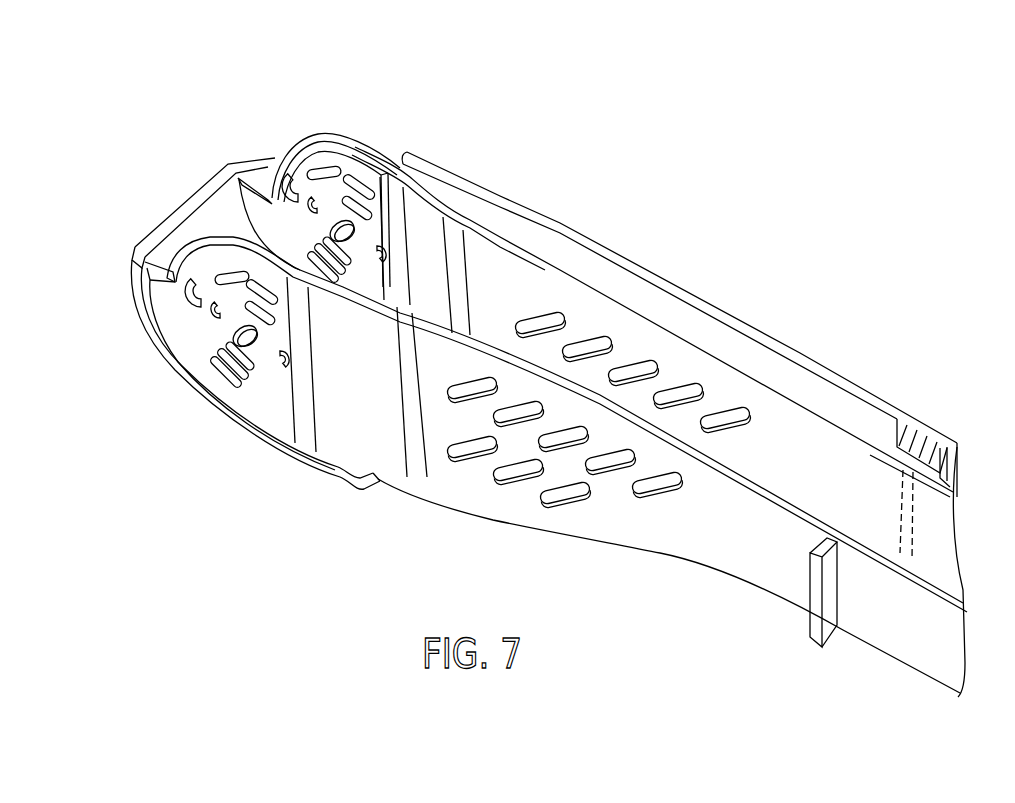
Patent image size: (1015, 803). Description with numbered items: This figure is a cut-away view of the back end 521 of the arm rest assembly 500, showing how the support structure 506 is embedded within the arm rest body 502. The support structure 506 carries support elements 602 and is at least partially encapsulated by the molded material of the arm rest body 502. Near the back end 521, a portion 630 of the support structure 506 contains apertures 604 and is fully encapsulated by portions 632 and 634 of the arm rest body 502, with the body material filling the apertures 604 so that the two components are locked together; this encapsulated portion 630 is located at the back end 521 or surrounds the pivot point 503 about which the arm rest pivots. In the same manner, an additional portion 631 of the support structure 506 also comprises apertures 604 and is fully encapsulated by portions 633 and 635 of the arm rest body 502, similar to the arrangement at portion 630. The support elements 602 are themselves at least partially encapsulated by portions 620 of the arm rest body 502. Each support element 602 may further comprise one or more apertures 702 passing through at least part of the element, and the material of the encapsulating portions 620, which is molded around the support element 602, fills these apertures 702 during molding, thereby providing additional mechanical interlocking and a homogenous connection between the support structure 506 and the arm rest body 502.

The arm rest assembly 500 is at (733, 148).
The arm rest body 502 is at (530, 205).
The pivot point 503 is at (250, 335).
The support structure 506 is at (442, 220).
The back end 521 is at (145, 222).
The support elements 602 is at (923, 447).
The apertures 604 is at (324, 172).
The portions of the arm rest body 620 is at (912, 438).
The portion of the support structure 630 is at (372, 150).
The additional portion of the support structure 631 is at (214, 345).
The portion of the arm rest body 632 is at (314, 188).
The portion of the arm rest body 633 is at (332, 445).
The portion of the arm rest body 634 is at (247, 177).
The portion of the arm rest body 635 is at (150, 275).
The apertures 702 is at (902, 516).